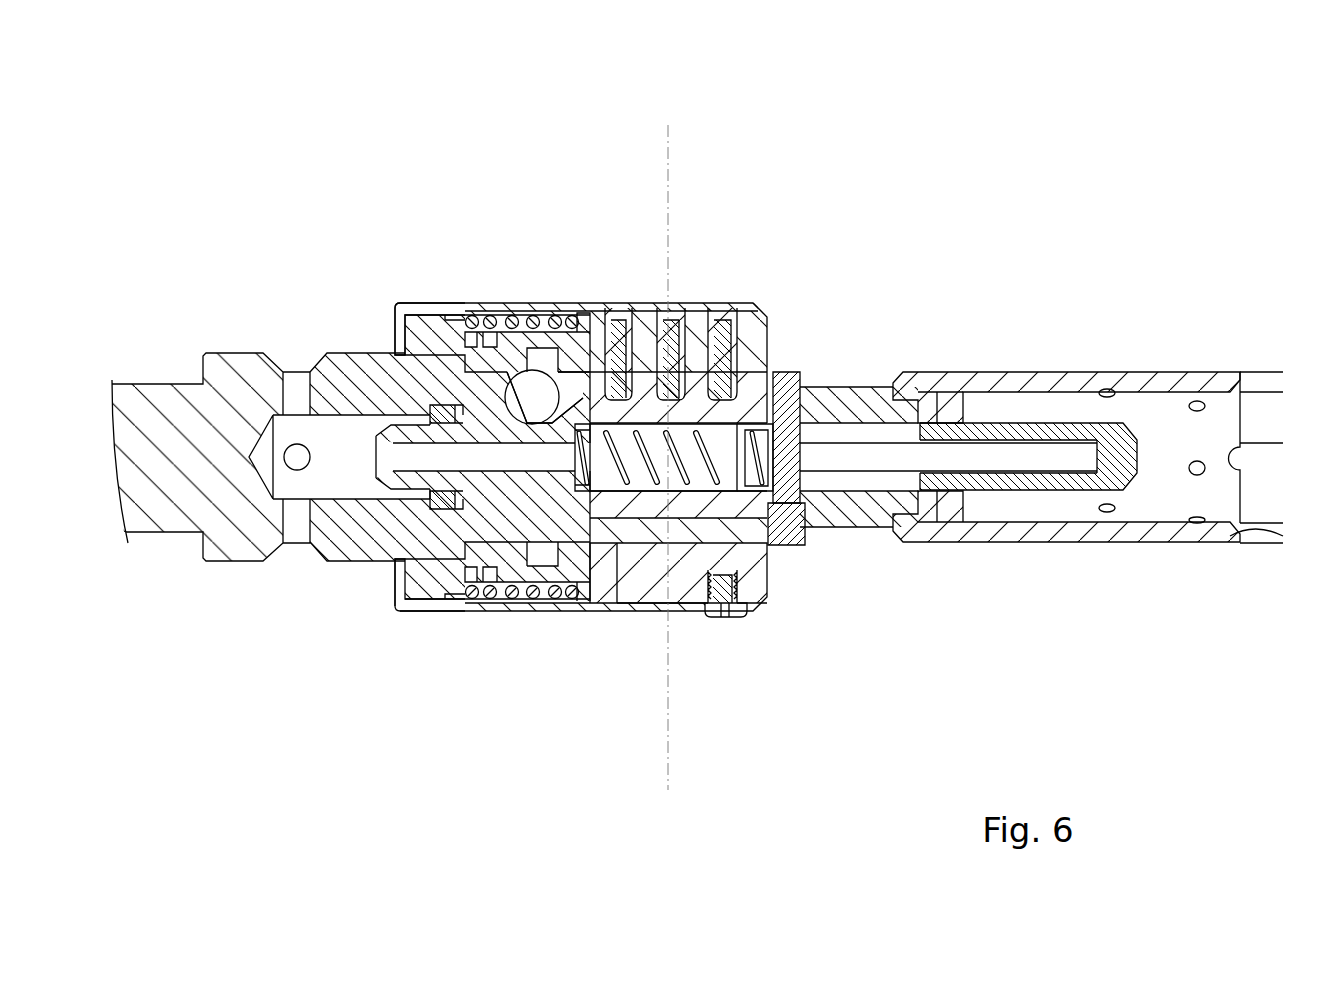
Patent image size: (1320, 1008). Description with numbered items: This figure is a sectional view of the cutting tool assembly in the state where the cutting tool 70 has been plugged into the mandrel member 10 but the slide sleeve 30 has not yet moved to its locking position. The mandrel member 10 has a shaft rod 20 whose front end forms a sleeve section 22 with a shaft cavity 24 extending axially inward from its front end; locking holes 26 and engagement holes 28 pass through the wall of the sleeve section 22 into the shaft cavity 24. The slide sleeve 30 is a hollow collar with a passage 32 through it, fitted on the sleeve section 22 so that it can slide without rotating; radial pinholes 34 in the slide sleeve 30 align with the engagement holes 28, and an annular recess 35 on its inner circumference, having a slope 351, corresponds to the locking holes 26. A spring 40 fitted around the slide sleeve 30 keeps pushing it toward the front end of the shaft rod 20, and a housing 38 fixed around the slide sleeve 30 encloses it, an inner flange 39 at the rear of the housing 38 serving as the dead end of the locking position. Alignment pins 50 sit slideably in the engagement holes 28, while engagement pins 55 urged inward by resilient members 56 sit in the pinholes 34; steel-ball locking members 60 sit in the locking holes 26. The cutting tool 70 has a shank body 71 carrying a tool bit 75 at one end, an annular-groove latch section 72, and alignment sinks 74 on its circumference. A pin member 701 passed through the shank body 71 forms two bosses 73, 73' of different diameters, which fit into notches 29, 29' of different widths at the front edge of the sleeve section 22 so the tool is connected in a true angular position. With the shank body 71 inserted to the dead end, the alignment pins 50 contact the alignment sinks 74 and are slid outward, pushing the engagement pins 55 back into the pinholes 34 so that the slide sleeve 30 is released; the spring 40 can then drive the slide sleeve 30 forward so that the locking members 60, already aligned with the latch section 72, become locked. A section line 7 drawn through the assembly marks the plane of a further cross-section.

The mandrel member 10 is at (321, 200).
The shaft rod 20 is at (228, 334).
The locking hole 26 is at (423, 365).
The slope 351 is at (515, 350).
The locking member 60 is at (533, 398).
The recess 35 is at (549, 358).
The latch section 72 is at (597, 410).
The shank body 71 is at (591, 357).
The alignment sink 74 is at (672, 330).
The pinhole 34 is at (688, 405).
The engagement pin 55 is at (706, 380).
The resilient member 56 is at (717, 373).
The alignment pin 50 is at (747, 367).
The engagement hole 28 is at (797, 390).
The boss 73 is at (830, 390).
The larger boss 73' is at (826, 580).
The notch 29 is at (945, 376).
The wider notch 29' is at (859, 551).
The pin member 701 is at (927, 380).
The cutting tool 70 is at (1165, 343).
The tool bit 75 is at (1125, 543).
The sleeve section 22 is at (737, 537).
The shaft cavity 24 is at (663, 590).
The passage 32 is at (633, 587).
The slide sleeve 30 is at (592, 598).
The spring 40 is at (525, 595).
The housing 38 is at (440, 613).
The inner flange 39 is at (395, 590).
The section line 7 is at (685, 813).